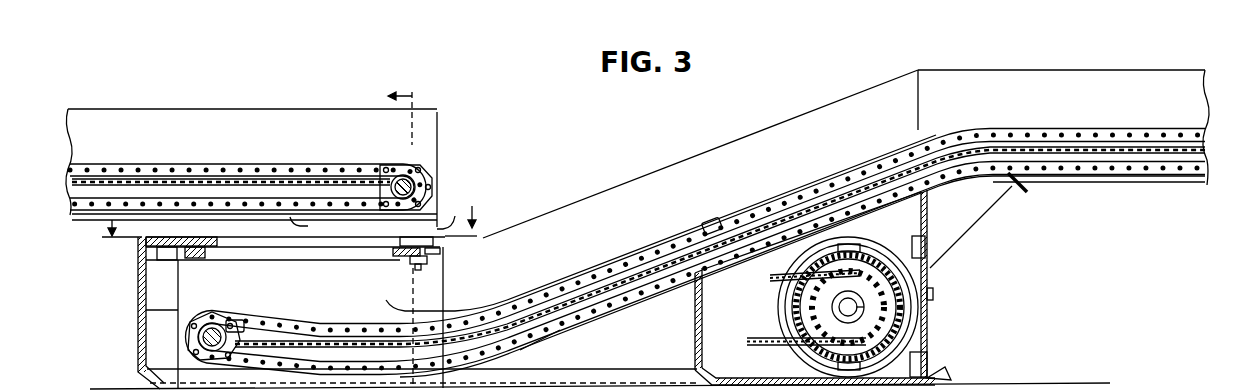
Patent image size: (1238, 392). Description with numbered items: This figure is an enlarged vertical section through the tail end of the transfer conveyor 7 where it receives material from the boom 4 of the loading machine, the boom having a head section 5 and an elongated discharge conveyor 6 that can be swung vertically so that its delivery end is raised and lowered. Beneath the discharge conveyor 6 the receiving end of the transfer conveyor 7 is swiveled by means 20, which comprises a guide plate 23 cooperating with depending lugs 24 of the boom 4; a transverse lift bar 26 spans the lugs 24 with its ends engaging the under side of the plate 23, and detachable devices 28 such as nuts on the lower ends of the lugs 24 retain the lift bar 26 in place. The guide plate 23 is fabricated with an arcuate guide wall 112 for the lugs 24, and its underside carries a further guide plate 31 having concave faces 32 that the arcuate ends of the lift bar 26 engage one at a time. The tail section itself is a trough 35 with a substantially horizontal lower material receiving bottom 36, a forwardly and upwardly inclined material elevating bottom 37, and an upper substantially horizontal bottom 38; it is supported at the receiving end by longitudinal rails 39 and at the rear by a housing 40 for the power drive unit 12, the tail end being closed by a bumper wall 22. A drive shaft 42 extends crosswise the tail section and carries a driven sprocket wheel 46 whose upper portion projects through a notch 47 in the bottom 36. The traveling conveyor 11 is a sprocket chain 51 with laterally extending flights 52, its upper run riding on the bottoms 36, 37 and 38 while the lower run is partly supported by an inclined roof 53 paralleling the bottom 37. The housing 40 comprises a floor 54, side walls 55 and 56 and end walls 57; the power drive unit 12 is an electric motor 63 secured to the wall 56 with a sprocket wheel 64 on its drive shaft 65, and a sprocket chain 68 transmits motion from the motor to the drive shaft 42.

The boom 4 is at (196, 126).
The head section 5 is at (437, 136).
The discharge conveyor 6 is at (288, 163).
The transfer conveyor 7 is at (1053, 82).
The flexible traveling material moving conveyor 11 is at (778, 184).
The power drive unit 12 is at (912, 331).
The swiveling means 20 is at (455, 239).
The bumper wall 22 is at (137, 300).
The guide plate 23 is at (183, 235).
The depending lugs 24 is at (418, 270).
The transverse lift bar 26 is at (393, 256).
The detachable devices 28 is at (428, 256).
The guide plate 31 is at (170, 258).
The concave faces 32 is at (193, 257).
The trough 35 is at (580, 212).
The lower material receiving bottom 36 is at (334, 340).
The material elevating bottom 37 is at (600, 283).
The upper bottom 38 is at (996, 186).
The rails 39 is at (596, 380).
The housing 40 is at (736, 328).
The drive shaft 42 is at (200, 338).
The driven sprocket wheel 46 is at (242, 324).
The notch 47 is at (238, 346).
The sprocket chain 51 is at (568, 283).
The wings or flights 52 is at (717, 222).
The inclined roof 53 is at (733, 267).
The floor 54 is at (730, 386).
The side wall 55 is at (696, 306).
The side wall 56 is at (929, 312).
The end walls 57 is at (720, 338).
The electric motor 63 is at (868, 258).
The sprocket wheel 64 is at (853, 285).
The drive shaft 65 is at (843, 306).
The sprocket chain 68 is at (775, 342).
The arcuate guide wall 112 is at (302, 248).